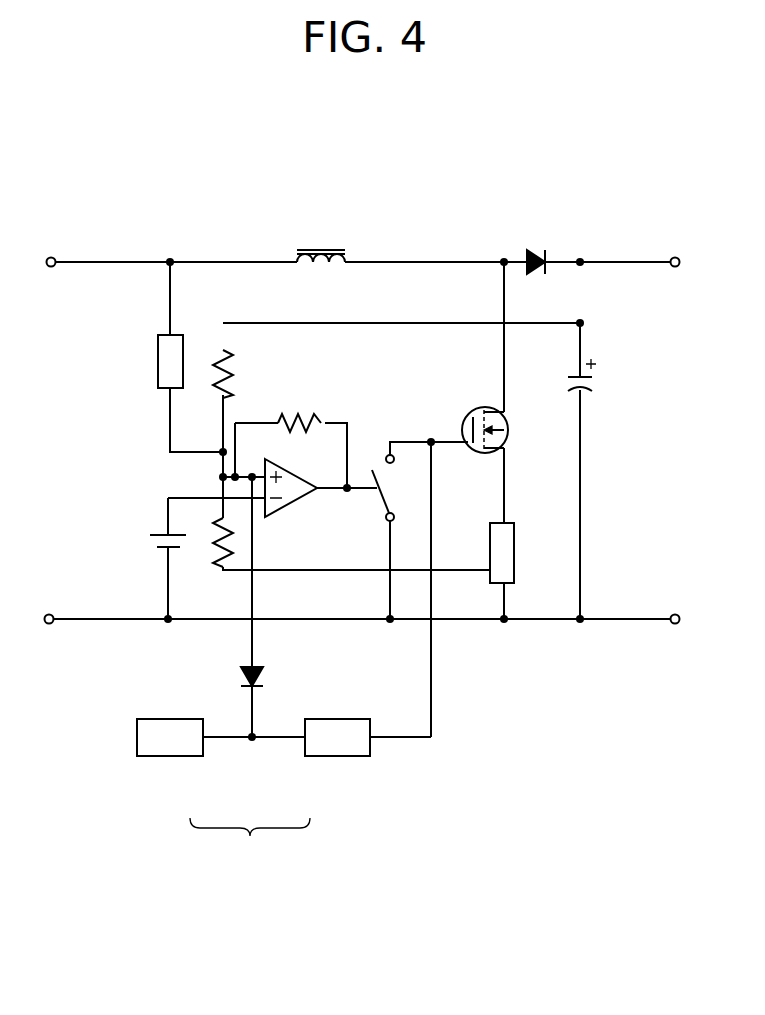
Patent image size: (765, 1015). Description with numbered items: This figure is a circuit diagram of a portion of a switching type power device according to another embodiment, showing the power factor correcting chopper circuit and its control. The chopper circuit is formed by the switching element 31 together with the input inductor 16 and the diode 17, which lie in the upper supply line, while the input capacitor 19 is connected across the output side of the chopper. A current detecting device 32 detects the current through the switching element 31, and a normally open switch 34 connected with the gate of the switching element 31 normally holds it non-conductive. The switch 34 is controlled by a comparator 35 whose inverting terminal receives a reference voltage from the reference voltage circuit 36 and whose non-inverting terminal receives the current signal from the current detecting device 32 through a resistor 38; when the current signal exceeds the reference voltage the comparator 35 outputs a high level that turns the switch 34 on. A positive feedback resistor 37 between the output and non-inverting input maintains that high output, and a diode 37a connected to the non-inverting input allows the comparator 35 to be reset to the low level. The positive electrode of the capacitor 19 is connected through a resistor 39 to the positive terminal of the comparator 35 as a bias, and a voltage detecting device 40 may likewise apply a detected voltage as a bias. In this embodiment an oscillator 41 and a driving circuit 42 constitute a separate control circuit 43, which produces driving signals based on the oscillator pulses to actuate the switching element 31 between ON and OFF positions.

The input inductor 16 is at (327, 250).
The diode 17 is at (532, 252).
The input capacitor 19 is at (590, 393).
The switching element 31 is at (483, 407).
The current detecting device 32 is at (507, 553).
The normally open switch 34 is at (385, 501).
The comparator 35 is at (295, 495).
The reference voltage circuit 36 is at (165, 548).
The positive feedback resistor 37 is at (283, 422).
The diode 37a is at (240, 677).
The resistor 38 is at (212, 552).
The resistor 39 is at (217, 357).
The voltage detecting device 40 is at (163, 360).
The oscillator 41 is at (180, 743).
The driving circuit 42 is at (323, 748).
The control circuit 43 is at (250, 844).